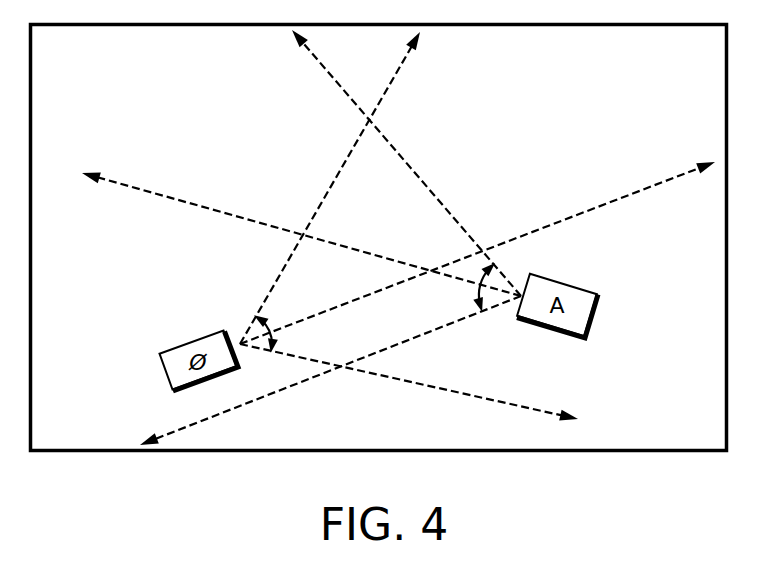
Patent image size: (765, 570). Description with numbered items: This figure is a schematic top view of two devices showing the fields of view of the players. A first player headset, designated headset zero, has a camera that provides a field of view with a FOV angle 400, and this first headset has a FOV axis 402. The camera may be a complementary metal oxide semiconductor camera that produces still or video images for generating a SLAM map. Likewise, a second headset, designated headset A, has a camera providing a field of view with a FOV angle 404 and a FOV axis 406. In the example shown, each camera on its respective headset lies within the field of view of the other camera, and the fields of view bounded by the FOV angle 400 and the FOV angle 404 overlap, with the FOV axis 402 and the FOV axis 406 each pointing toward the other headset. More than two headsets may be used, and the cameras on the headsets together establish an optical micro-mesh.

The FOV angle 400 is at (268, 340).
The FOV axis 402 is at (657, 182).
The FOV angle 404 is at (508, 266).
The FOV axis 406 is at (183, 201).